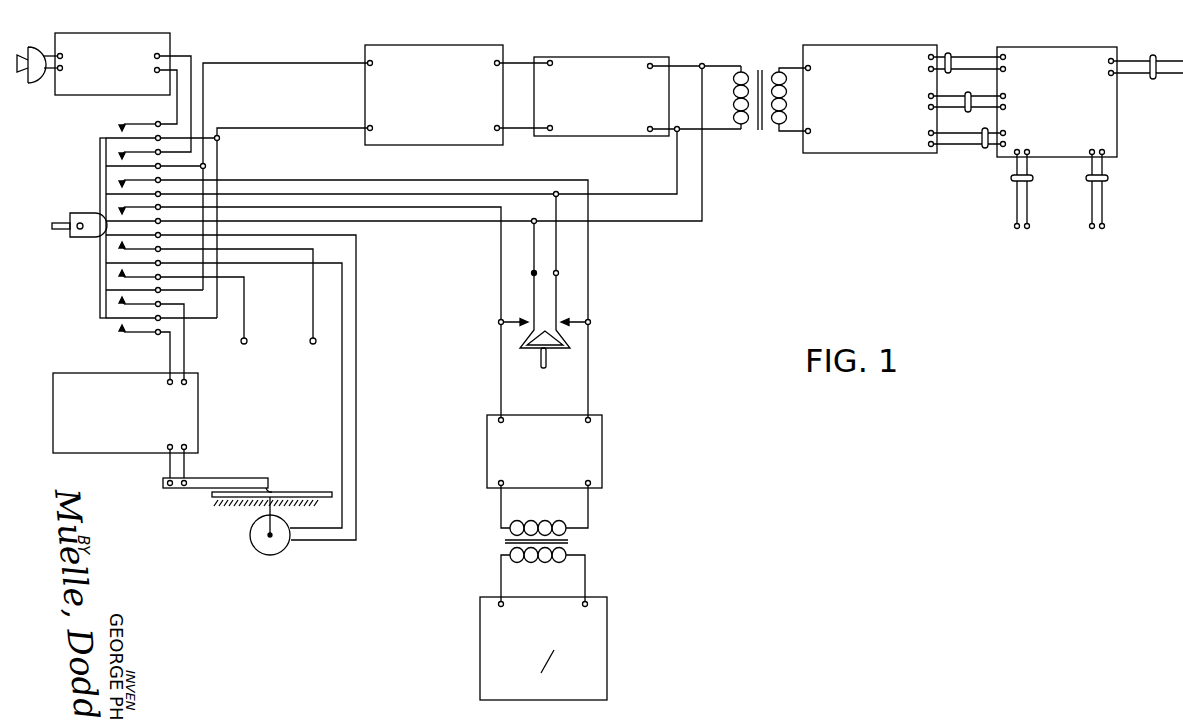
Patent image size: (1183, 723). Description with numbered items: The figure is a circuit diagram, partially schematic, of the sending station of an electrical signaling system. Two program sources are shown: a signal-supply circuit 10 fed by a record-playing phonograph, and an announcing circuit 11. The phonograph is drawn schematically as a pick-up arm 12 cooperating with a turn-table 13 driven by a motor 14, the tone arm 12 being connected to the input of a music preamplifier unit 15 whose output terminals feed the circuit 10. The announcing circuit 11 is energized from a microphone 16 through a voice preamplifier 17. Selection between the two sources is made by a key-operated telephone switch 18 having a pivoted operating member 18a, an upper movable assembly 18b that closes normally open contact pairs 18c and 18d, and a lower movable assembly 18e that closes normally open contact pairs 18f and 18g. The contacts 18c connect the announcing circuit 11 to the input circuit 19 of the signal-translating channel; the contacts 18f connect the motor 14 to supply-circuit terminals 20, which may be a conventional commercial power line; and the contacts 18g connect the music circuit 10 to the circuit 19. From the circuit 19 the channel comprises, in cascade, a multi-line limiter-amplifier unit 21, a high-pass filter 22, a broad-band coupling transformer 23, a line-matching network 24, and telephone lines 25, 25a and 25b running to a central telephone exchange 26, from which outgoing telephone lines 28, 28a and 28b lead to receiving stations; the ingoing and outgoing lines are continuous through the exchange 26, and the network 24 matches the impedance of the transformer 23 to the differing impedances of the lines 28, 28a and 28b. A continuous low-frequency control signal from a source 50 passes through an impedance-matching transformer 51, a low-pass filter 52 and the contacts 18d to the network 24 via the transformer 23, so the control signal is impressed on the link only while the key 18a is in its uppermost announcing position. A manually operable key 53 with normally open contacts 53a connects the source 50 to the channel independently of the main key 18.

The signal-supply circuit 10 is at (184, 352).
The announcing circuit 11 is at (160, 70).
The pick-up arm 12 is at (218, 480).
The turn-table 13 is at (295, 492).
The motor 14 is at (276, 552).
The music preamplifier unit 15 is at (100, 446).
The microphone 16 is at (32, 78).
The voice preamplifier 17 is at (85, 96).
The key-operated telephone switch 18 is at (146, 121).
The pivoted operating member 18a is at (70, 237).
The upper movable assembly 18b is at (100, 212).
The contacts 18c is at (118, 162).
The contacts 18d is at (118, 218).
The lower movable assembly 18e is at (100, 280).
The contacts 18f is at (113, 268).
The contacts 18g is at (113, 328).
The input circuit 19 is at (268, 63).
The supply-circuit terminals 20 is at (310, 344).
The multi-line limiter-amplifier unit 21 is at (440, 63).
The high-pass filter 22 is at (613, 62).
The broad-band coupling transformer 23 is at (773, 48).
The line-matching network 24 is at (868, 57).
The telephone line 25 is at (951, 60).
The telephone line 25a is at (947, 103).
The telephone line 25b is at (947, 138).
The central telephone exchange 26 is at (1073, 63).
The outgoing telephone line 28 is at (1133, 67).
The outgoing telephone line 28a is at (1016, 179).
The outgoing telephone line 28b is at (1104, 179).
The low-frequency control signal source 50 is at (488, 653).
The impedance-matching transformer 51 is at (499, 540).
The low-pass filter 52 is at (495, 447).
The manually operable key 53 is at (560, 345).
The contacts 53a is at (527, 320).